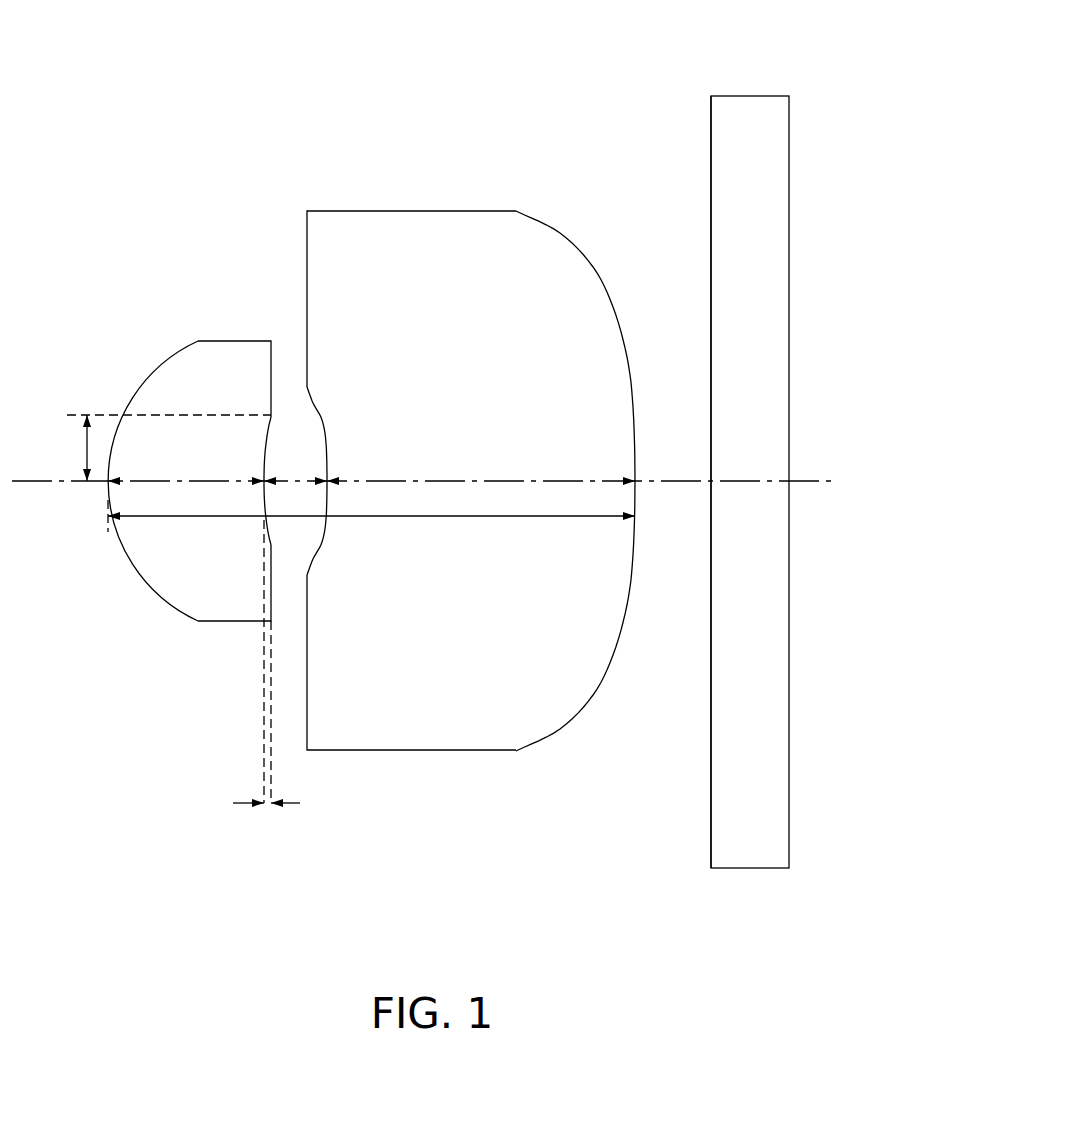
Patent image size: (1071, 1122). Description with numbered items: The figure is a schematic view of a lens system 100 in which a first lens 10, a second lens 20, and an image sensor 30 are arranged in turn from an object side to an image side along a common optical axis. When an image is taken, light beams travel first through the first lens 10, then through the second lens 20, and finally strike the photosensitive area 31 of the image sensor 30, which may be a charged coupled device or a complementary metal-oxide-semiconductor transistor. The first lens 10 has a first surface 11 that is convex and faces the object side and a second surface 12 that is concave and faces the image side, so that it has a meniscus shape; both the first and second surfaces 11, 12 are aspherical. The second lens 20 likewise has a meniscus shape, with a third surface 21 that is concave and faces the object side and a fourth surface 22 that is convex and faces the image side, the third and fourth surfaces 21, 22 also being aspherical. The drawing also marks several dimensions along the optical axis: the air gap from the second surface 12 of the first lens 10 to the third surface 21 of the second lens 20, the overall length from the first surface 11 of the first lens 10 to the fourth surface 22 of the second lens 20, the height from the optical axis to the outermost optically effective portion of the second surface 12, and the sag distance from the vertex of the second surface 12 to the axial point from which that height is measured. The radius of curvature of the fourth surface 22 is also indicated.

The lens system 100 is at (393, 44).
The first lens 10 is at (177, 582).
The first surface 11 is at (147, 378).
The second surface 12 is at (270, 430).
The second lens 20 is at (426, 713).
The third surface 21 is at (320, 422).
The fourth surface 22 is at (597, 675).
The image sensor 30 is at (735, 222).
The photosensitive area 31 is at (711, 481).